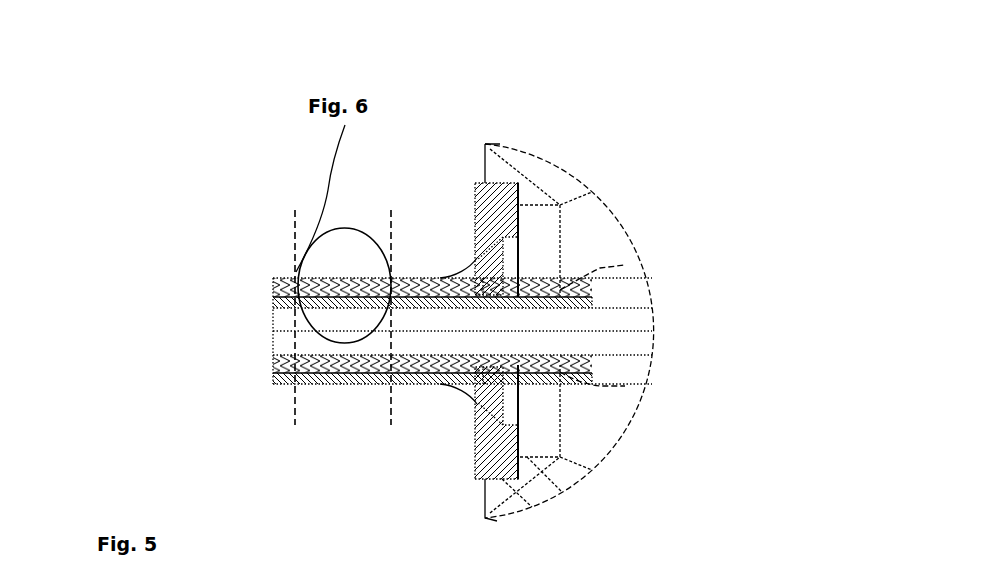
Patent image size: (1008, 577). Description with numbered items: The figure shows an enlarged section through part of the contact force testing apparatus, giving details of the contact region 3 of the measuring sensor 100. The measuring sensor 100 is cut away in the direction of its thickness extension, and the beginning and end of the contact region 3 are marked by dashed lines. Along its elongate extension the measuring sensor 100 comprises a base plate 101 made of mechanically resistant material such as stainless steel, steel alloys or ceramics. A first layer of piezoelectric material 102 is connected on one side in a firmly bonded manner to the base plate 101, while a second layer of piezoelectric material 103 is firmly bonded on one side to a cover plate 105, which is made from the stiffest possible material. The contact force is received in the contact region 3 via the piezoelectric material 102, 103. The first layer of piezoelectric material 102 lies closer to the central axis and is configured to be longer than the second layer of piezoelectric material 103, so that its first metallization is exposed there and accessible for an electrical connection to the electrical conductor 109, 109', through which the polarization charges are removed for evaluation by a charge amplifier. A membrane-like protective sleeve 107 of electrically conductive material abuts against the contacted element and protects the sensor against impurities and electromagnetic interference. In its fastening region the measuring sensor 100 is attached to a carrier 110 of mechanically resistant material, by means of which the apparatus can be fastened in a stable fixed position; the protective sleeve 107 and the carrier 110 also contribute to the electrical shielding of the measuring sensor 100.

The measuring sensor 100 is at (290, 140).
The base plate 101 is at (283, 316).
The first layer of piezoelectric material 102 is at (590, 303).
The second layer of piezoelectric material 103 is at (290, 278).
The cover plate 105 is at (422, 274).
The protective sleeve 107 is at (481, 205).
The electrical conductor 109 is at (569, 213).
The electrical conductor 109' is at (602, 439).
The carrier 110 is at (504, 165).
The contact region 3 is at (291, 395).